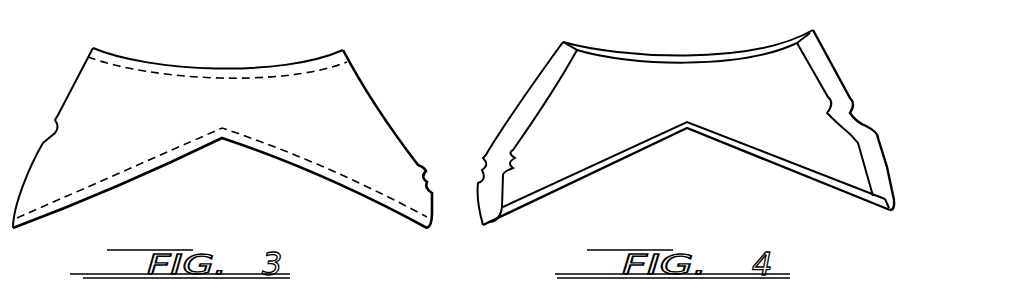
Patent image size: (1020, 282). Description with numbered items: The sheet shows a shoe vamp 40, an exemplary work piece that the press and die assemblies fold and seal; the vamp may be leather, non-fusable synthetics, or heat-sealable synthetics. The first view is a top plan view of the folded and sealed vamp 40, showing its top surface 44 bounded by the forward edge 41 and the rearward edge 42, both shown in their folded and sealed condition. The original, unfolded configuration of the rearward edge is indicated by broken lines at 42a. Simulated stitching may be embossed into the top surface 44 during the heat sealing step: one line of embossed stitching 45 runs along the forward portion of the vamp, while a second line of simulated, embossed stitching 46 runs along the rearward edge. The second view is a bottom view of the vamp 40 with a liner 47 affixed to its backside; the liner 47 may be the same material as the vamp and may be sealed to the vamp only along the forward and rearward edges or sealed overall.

In FIG. 4, the shoe vamp 40 is at (699, 127).
In FIG. 3, the forward edge 41 is at (222, 68).
In FIG. 4, the forward edge 41 is at (630, 50).
In FIG. 4, the rearward edge 42 is at (810, 176).
In FIG. 3, the original configuration of rearward edge 42a is at (307, 168).
In FIG. 3, the top surface 44 is at (347, 134).
In FIG. 4, the top surface 44 is at (872, 152).
In FIG. 3, the embossed stitching 45 is at (223, 80).
In FIG. 3, the second line of simulated embossed stitching 46 is at (145, 159).
In FIG. 4, the liner 47 is at (800, 85).